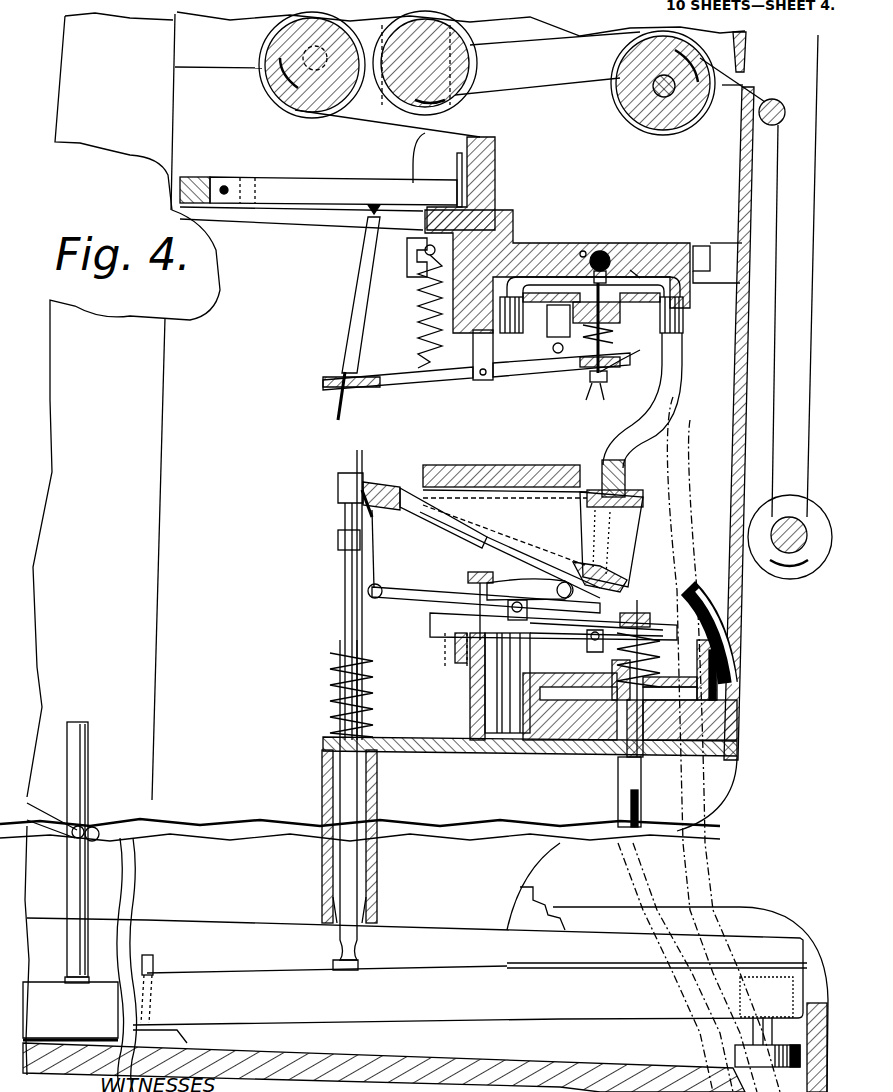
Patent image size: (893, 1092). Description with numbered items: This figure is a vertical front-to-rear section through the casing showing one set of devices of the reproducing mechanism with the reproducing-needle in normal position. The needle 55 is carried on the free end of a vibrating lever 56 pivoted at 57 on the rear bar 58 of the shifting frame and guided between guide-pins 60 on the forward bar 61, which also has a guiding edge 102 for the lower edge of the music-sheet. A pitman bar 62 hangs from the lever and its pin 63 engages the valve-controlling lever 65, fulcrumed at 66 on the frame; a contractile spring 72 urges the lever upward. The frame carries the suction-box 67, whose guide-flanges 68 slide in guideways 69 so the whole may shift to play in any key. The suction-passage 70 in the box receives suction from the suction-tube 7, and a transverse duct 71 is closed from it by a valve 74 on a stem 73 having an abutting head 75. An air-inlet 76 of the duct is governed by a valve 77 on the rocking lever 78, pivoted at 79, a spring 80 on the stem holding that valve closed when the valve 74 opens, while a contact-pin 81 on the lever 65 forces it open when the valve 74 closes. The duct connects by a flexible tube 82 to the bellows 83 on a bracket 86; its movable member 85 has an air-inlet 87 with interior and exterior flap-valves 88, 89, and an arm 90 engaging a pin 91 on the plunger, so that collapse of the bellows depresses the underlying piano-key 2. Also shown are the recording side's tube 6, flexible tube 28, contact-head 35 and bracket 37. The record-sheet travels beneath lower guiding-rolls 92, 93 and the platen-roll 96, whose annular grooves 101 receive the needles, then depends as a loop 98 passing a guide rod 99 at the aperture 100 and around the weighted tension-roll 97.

The piano-key 2 is at (600, 1000).
The tube 6 is at (627, 867).
The suction-tube 7 is at (755, 590).
The flexible tube 28 is at (717, 630).
The contact-head 35 is at (522, 595).
The bracket 37 is at (600, 614).
The needle 55 is at (413, 143).
The lever 56 is at (333, 184).
The pivot 57 is at (228, 195).
The rear bar 58 is at (210, 170).
The guide-pins 60 is at (496, 150).
The forward bar 61 is at (496, 188).
The pitman bar 62 is at (360, 259).
The pin 63 is at (343, 390).
The valve-controlling lever 65 is at (505, 378).
The fulcrum 66 is at (455, 383).
The suction-box 67 is at (520, 228).
The guide-flanges 68 is at (413, 250).
The guideways 69 is at (397, 273).
The suction-passage 70 is at (606, 250).
The duct 71 is at (630, 270).
The spring 72 is at (418, 302).
The stem 73 is at (612, 318).
The valve 74 is at (583, 252).
The abutting head 75 is at (604, 383).
The air-inlet 76 is at (500, 327).
The valve 77 is at (556, 358).
The rocking lever 78 is at (600, 396).
The pivot 79 is at (568, 348).
The spring 80 is at (614, 356).
The contact-pin 81 is at (674, 348).
The flexible tube 82 is at (668, 396).
The bellows 83 is at (510, 548).
The movable member 85 is at (480, 583).
The bracket 86 is at (480, 460).
The air-inlet 87 is at (595, 470).
The interior flap-valve 88 is at (611, 538).
The exterior flap-valve 89 is at (625, 590).
The arm 90 is at (405, 482).
The pin 91 is at (355, 455).
The lower guiding-roll 92 is at (312, 92).
The lower guiding-roll 93 is at (672, 122).
The platen-roll 96 is at (452, 82).
The tension-roll 97 is at (795, 528).
The loop 98 is at (814, 272).
The guide rod 99 is at (790, 95).
The aperture 100 is at (748, 58).
The annular grooves 101 is at (466, 58).
The guiding edge 102 is at (443, 158).